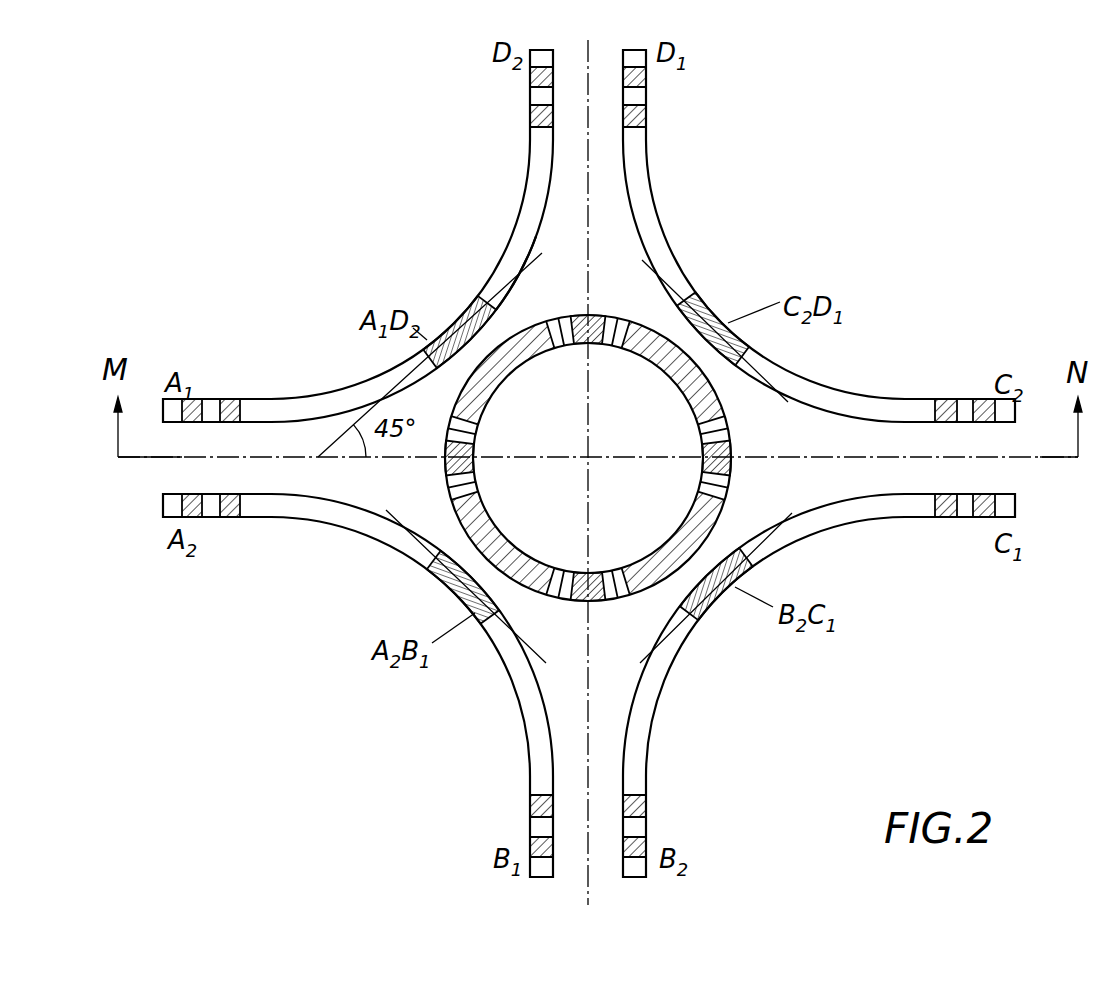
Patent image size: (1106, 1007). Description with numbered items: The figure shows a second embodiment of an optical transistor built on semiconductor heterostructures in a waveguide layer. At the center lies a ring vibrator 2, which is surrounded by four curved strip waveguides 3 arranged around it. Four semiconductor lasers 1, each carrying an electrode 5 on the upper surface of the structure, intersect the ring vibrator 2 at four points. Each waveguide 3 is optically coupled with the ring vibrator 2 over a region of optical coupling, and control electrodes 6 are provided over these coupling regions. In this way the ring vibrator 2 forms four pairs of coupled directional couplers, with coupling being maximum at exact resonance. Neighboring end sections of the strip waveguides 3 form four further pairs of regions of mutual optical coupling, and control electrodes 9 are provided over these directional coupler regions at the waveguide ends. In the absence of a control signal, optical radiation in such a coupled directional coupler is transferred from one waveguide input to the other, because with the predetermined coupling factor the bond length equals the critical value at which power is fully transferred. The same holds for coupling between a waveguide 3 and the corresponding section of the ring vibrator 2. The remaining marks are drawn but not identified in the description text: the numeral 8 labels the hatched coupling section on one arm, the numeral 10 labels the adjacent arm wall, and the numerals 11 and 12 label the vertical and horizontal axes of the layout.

The semiconductor laser 1 is at (604, 322).
The ring vibrator 2 is at (623, 343).
The waveguide 3 is at (530, 198).
The electrode 5 is at (582, 370).
The control electrode 6 is at (673, 553).
The coupling section of arm 8 is at (452, 318).
The control electrode 9 is at (533, 110).
The arm wall 10 is at (500, 287).
The vertical axis 11 is at (588, 218).
The horizontal axis 12 is at (848, 457).